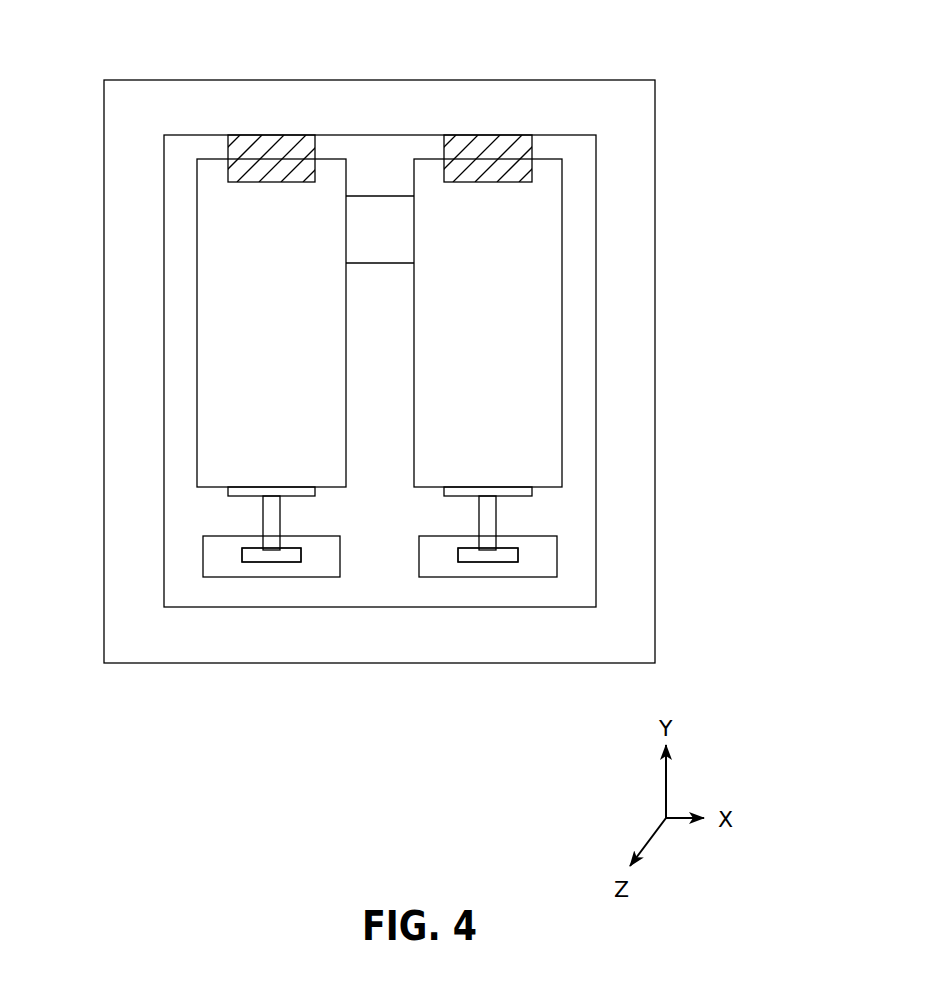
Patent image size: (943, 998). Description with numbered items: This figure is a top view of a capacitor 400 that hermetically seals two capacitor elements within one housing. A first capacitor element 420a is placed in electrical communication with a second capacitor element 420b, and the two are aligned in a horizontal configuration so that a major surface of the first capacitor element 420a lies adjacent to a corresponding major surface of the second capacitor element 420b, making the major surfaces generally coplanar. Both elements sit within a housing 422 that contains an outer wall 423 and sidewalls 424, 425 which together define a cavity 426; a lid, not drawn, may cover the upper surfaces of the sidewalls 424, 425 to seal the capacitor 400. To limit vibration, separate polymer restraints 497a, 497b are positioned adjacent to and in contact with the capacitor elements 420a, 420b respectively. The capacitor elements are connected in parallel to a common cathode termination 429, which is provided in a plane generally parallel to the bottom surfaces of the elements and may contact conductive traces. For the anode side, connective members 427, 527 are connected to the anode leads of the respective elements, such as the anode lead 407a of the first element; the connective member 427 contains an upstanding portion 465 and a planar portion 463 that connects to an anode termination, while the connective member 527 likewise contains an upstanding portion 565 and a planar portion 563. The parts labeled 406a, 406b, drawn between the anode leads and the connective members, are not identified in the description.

The capacitor 400 is at (719, 89).
The housing 422 is at (677, 594).
The sidewall 424 is at (400, 88).
The sidewall 425 is at (118, 355).
The first capacitor element 420a is at (280, 328).
The second capacitor element 420b is at (507, 328).
The polymer restraint 497a is at (264, 148).
The polymer restraint 497b is at (490, 148).
The common cathode termination 429 is at (374, 213).
The cavity 426 is at (359, 360).
The anode lead 407a is at (270, 492).
The first lead / interconnect 406a is at (270, 513).
The second lead / interconnect 406b is at (487, 513).
The connective member 427 is at (216, 584).
The connective member 527 is at (536, 568).
The planar portion 463 is at (303, 549).
The upstanding portion 465 is at (252, 556).
The planar portion 563 is at (435, 572).
The upstanding portion 565 is at (480, 557).
The outer wall 423 is at (398, 566).